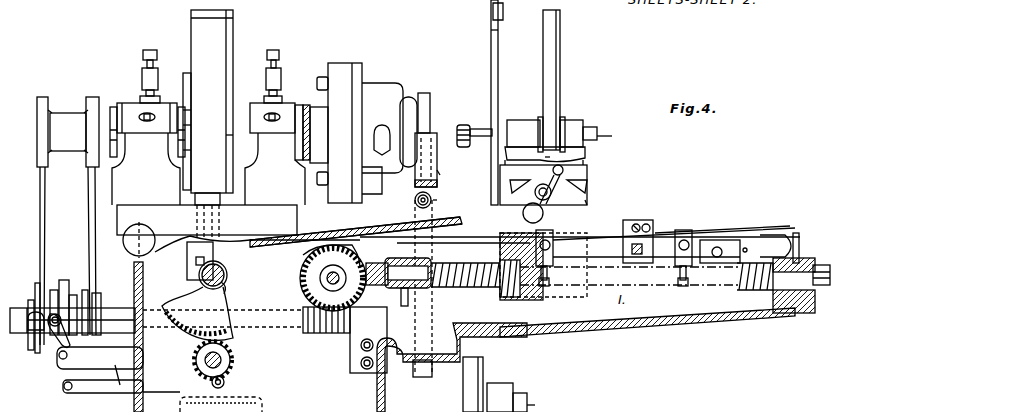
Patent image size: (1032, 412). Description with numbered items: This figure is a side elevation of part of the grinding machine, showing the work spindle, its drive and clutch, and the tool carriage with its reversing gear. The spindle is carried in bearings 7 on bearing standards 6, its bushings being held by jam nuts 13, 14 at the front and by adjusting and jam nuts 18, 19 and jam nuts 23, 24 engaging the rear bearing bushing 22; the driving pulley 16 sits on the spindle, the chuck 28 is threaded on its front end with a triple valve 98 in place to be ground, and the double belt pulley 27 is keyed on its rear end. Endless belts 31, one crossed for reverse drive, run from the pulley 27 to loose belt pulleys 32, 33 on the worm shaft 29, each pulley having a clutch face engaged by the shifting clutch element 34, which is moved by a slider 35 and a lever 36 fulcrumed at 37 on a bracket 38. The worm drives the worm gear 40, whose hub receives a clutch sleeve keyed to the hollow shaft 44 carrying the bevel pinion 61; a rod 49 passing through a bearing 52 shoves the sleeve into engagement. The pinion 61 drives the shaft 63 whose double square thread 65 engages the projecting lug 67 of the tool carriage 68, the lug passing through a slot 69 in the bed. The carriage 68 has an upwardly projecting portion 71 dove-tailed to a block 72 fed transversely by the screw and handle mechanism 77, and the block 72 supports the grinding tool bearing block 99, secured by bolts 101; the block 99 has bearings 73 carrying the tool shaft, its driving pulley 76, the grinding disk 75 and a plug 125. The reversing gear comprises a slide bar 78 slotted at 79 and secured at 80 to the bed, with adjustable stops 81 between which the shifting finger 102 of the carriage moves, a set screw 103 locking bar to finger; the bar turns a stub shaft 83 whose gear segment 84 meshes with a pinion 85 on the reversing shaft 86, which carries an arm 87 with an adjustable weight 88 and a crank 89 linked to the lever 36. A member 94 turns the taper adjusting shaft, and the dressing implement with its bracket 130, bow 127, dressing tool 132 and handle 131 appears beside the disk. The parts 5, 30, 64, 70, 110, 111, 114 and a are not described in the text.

The base 5 is at (222, 204).
The bearing standards 6 is at (140, 178).
The bearings 7 is at (133, 107).
The jam nut 13 is at (202, 151).
The jam nut 14 is at (228, 137).
The driving pulley 16 is at (228, 92).
The adjusting and jam nut 18 is at (186, 115).
The adjusting and jam nut 19 is at (186, 132).
The bearing bushing 22 is at (181, 108).
The jam nut 23 is at (130, 103).
The jam nut 24 is at (112, 108).
The double belt pulley 27 is at (88, 106).
The chuck 28 is at (347, 86).
The worm shaft 29 is at (310, 330).
The box 30 is at (348, 344).
The endless belts 31 is at (88, 190).
The loose belt pulley 32 is at (53, 290).
The loose belt pulley 33 is at (134, 268).
The shifting clutch element 34 is at (63, 292).
The slider 35 is at (31, 315).
The lever 36 is at (65, 385).
The fulcrum 37 is at (56, 370).
The bracket 38 is at (106, 358).
The worm gear 40 is at (122, 385).
The hollow shaft 44 is at (320, 277).
The rod 49 is at (302, 290).
The bearing 52 is at (368, 240).
The bevel pinion 61 is at (352, 237).
The shaft 63 is at (430, 284).
The pin 64 is at (406, 298).
The double square thread 65 is at (602, 283).
The projecting lug 67 is at (522, 303).
The tool slide or carriage 68 is at (612, 225).
The slot 69 is at (415, 201).
The rail 70 is at (703, 232).
The upwardly projecting portion 71 is at (583, 202).
The block 72 is at (581, 175).
The bearings 73 is at (526, 128).
The grinding disk 75 is at (464, 125).
The driving pulley 76 is at (562, 120).
The screw and handle mechanism 77 is at (544, 194).
The slide bar 78 is at (580, 250).
The slots 79 is at (758, 242).
The securing point 80 is at (725, 242).
The adjustable stops 81 is at (553, 240).
The stub shaft 83 is at (226, 275).
The gear segment 84 is at (222, 285).
The pinion 85 is at (225, 380).
The reversing shaft 86 is at (232, 358).
The arm 87 is at (223, 300).
The adjustable weight 88 is at (213, 256).
The crank 89 is at (230, 397).
The member 94 is at (123, 240).
The triple valve 98 is at (428, 112).
The grinding tool bearing block 99 is at (597, 132).
The bolts 101 is at (545, 160).
The shifting finger 102 is at (645, 222).
The set screw 103 is at (634, 256).
The roller 110 is at (450, 178).
The roller 111 is at (448, 201).
The wall 114 is at (444, 347).
The plug 125 is at (586, 273).
The bow 127 is at (491, 54).
The bracket 130 is at (490, 160).
The handle 131 is at (488, 16).
The dressing tool 132 is at (487, 37).
The part a is at (30, 288).